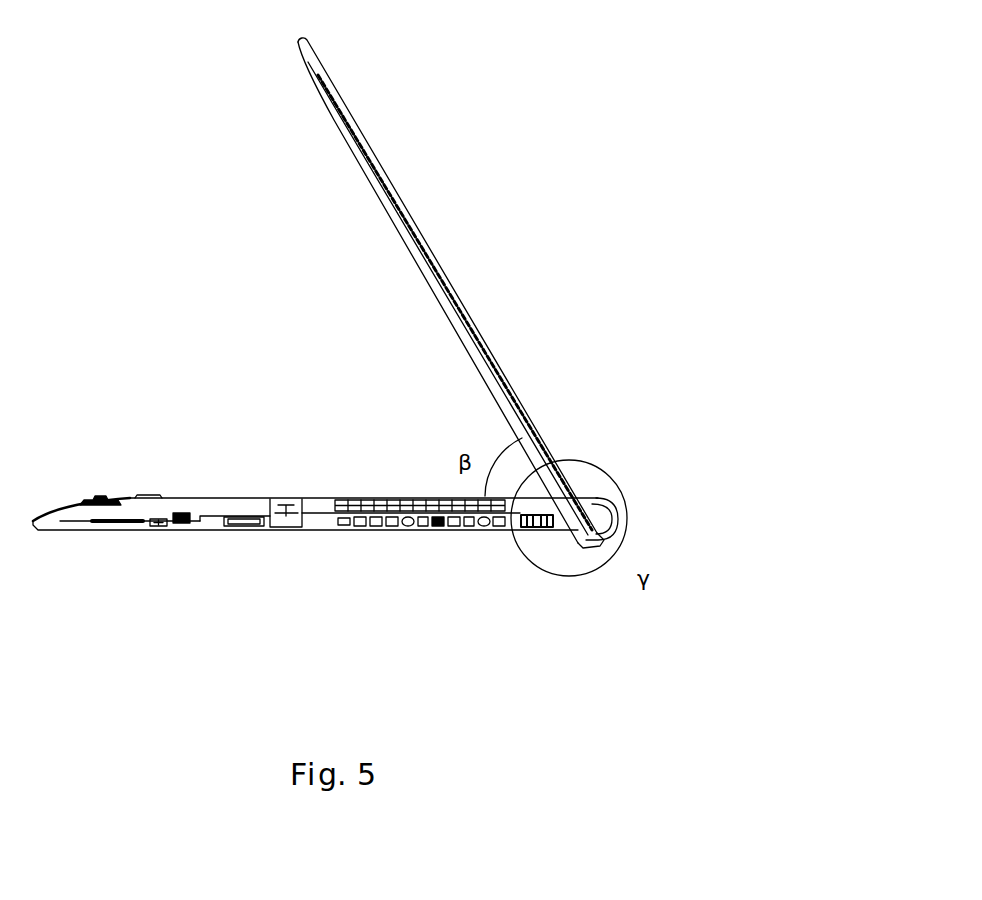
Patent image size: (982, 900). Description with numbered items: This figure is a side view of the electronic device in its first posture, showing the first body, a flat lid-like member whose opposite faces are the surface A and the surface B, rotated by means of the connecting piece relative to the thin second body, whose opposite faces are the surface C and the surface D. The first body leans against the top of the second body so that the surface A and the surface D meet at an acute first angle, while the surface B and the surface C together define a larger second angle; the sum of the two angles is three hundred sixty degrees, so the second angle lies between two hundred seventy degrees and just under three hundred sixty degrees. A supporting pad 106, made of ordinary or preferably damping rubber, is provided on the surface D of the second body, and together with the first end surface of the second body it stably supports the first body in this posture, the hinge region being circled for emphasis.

The supporting pad 106 is at (539, 498).
The A surface A is at (431, 290).
The B surface B is at (372, 147).
The C surface C is at (306, 531).
The D surface D is at (222, 497).